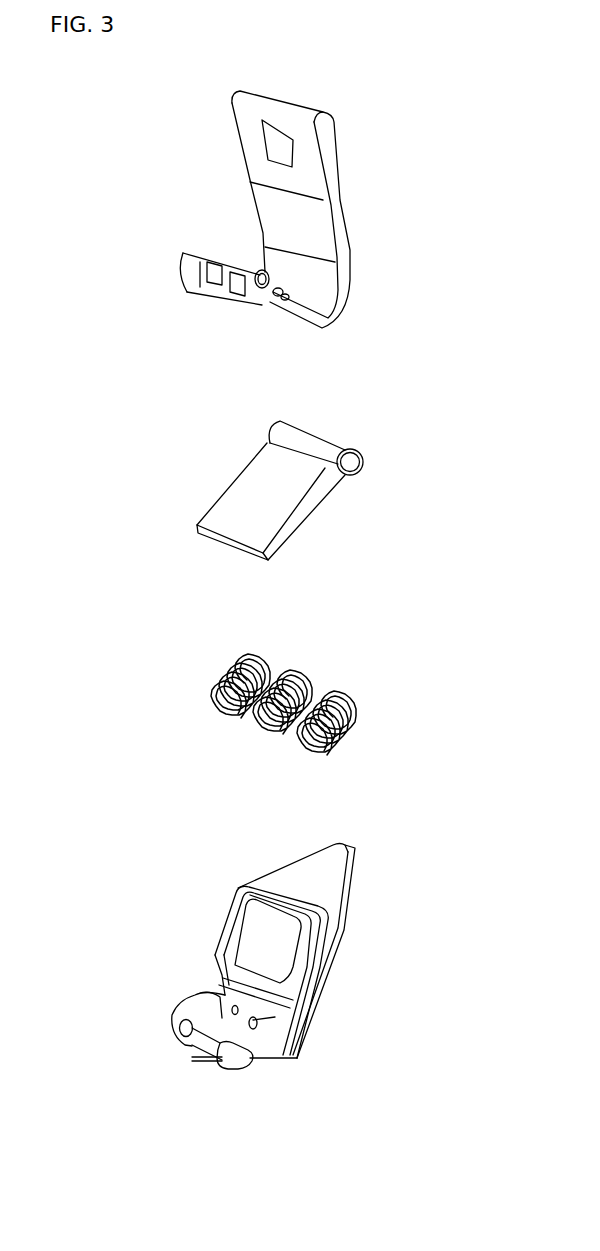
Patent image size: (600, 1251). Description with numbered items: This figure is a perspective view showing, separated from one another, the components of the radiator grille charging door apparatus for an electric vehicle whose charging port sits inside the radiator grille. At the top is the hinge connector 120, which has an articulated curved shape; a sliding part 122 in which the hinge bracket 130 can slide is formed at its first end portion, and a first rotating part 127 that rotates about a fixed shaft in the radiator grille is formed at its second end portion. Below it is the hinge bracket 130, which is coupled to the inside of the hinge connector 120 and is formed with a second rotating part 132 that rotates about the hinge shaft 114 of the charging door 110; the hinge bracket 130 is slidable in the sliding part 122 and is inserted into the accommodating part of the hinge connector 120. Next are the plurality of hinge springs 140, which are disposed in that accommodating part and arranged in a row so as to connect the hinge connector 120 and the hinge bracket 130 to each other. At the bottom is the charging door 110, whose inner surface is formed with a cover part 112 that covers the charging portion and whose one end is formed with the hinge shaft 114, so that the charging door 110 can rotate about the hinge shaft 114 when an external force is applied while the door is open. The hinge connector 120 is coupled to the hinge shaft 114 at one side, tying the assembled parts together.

The charging door 110 is at (235, 875).
The cover part 112 is at (233, 905).
The hinge shaft 114 is at (190, 1043).
The hinge connector 120 is at (223, 137).
The sliding part 122 is at (337, 163).
The first rotating part 127 is at (267, 296).
The hinge bracket 130 is at (226, 472).
The second rotating part 132 is at (364, 457).
The hinge springs 140 is at (213, 675).